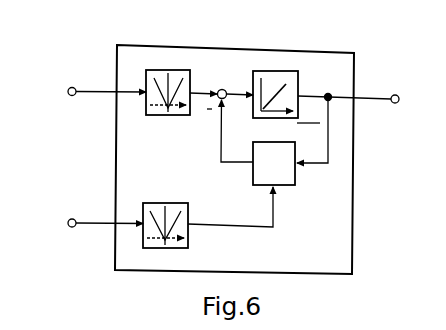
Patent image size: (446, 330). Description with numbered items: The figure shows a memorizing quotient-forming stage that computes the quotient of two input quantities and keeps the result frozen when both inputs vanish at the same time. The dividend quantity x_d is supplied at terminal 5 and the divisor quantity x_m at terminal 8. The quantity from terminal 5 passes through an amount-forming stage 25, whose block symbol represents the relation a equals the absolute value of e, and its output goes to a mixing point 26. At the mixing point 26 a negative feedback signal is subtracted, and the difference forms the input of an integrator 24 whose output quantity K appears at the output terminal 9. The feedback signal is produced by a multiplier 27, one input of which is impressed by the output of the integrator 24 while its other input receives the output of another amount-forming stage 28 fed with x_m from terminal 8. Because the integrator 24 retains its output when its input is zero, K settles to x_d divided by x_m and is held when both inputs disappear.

The terminal 5 is at (68, 92).
The terminal 8 is at (68, 223).
The output terminal (signal K) 9 is at (355, 91).
The integrator 24 is at (305, 68).
The amount-forming stage 25 is at (171, 115).
The mixing point 26 is at (222, 89).
The multiplier 27 is at (295, 178).
The amount-forming stage 28 is at (165, 203).